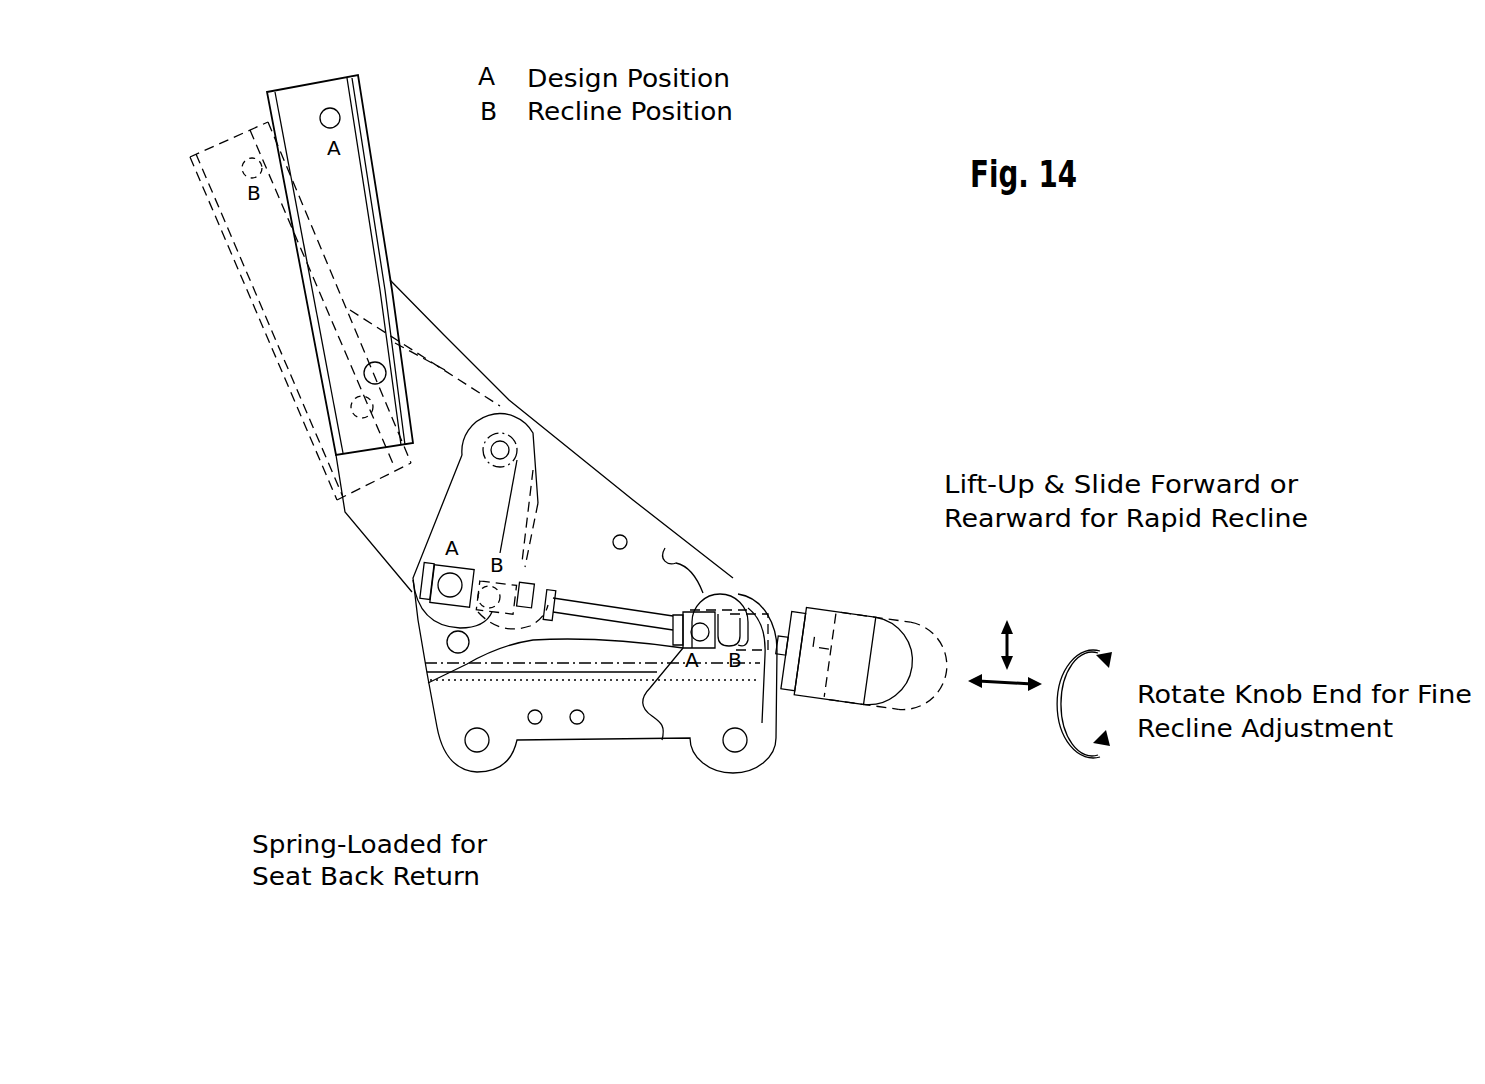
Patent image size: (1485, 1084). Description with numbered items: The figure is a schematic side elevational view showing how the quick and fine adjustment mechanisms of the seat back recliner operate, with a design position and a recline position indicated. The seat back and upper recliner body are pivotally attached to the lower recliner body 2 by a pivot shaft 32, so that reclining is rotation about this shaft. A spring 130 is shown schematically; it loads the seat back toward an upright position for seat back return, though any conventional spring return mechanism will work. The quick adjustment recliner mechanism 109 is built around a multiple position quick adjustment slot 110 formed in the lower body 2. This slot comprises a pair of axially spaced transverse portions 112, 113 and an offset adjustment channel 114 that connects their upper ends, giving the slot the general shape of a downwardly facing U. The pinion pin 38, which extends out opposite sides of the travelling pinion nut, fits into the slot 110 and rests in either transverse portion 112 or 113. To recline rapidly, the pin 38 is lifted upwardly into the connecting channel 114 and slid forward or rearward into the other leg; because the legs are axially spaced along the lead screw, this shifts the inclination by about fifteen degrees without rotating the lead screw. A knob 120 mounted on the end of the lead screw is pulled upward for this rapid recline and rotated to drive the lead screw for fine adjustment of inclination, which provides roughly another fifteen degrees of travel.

The lower recliner body 2 is at (588, 490).
The pivot shaft 32 is at (500, 440).
The spring 130 is at (540, 428).
The quick adjustment slot 110 is at (665, 548).
The quick adjustment recliner mechanism 109 is at (727, 582).
The offset adjustment channel 114 is at (745, 604).
The knob 120 is at (823, 607).
The transverse portion 112 is at (428, 683).
The transverse portion 113 is at (780, 726).
The pinion pin 38 is at (662, 740).